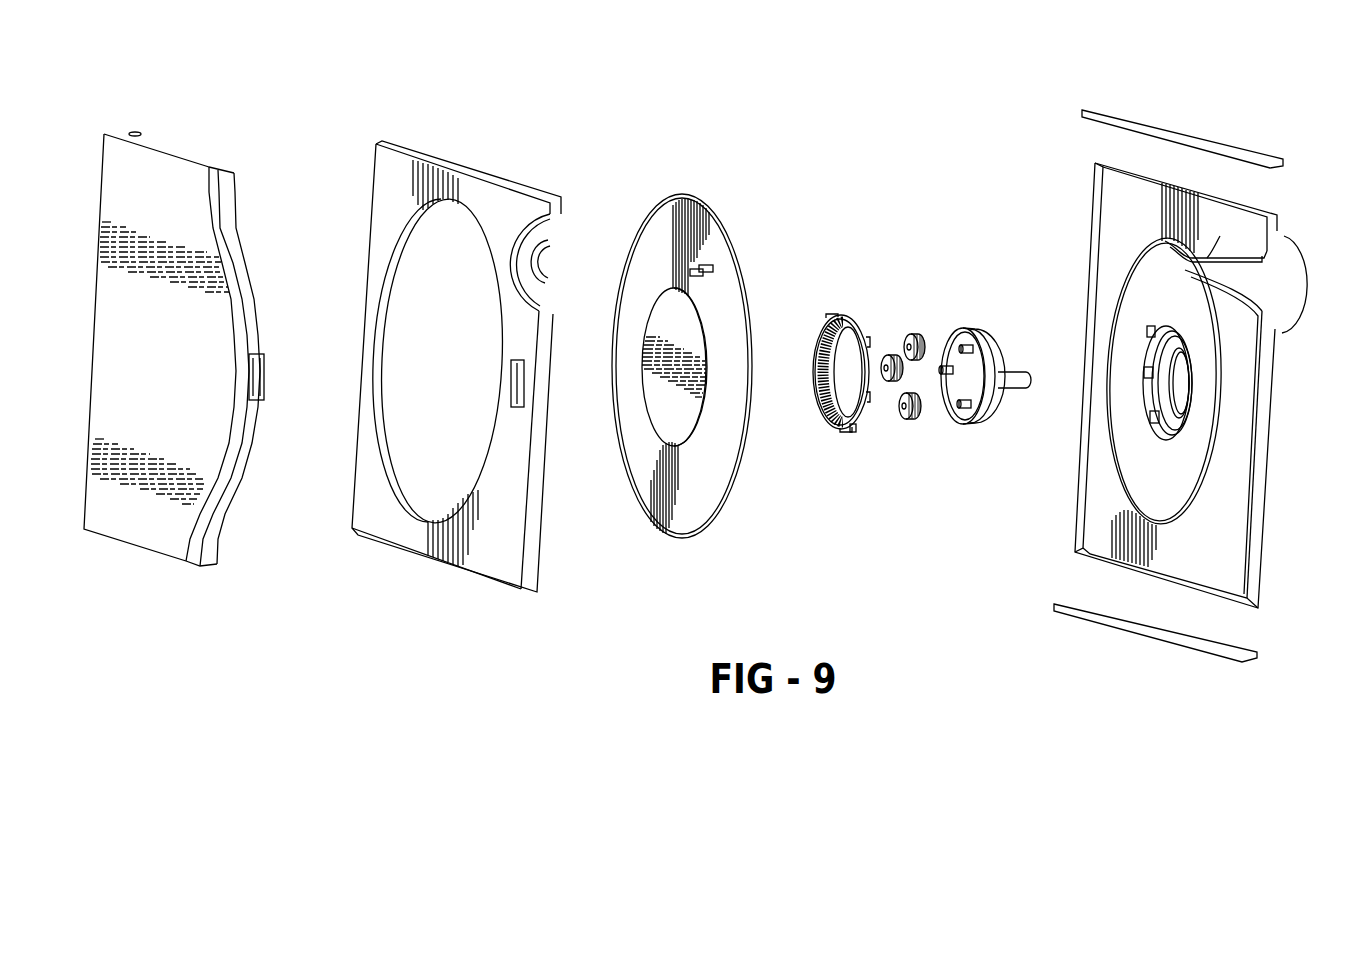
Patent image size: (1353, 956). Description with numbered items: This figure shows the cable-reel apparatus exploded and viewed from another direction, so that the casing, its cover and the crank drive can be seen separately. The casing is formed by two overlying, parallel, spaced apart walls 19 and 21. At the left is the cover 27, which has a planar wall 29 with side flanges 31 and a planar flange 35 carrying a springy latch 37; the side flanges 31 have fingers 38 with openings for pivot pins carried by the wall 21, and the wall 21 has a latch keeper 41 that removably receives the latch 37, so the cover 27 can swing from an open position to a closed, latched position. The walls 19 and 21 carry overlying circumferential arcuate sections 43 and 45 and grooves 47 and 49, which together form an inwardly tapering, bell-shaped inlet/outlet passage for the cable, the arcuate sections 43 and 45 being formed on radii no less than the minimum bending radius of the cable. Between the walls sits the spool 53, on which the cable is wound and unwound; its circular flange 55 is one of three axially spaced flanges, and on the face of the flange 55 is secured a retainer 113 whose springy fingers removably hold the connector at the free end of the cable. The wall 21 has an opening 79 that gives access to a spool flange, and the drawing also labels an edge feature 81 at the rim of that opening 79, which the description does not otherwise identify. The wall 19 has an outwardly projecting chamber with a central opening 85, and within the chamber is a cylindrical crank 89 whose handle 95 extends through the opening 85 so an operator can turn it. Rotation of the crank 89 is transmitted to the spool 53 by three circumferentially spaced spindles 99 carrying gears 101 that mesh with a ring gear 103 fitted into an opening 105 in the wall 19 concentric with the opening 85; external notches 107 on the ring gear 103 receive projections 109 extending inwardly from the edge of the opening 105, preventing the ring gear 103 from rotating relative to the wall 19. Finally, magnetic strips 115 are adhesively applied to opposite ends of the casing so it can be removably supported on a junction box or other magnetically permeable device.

The wall 19 is at (1193, 381).
The wall 21 is at (483, 366).
The cover 27 is at (204, 311).
The planar wall 29 is at (156, 350).
The side flanges 31 is at (211, 153).
The planar flange 35 is at (249, 318).
The springy latch 37 is at (268, 382).
The fingers 38 is at (136, 131).
The latch keeper 41 is at (524, 386).
The arcuate section 43 is at (1290, 258).
The arcuate section 45 is at (541, 278).
The groove 47 is at (1220, 236).
The groove 49 is at (537, 247).
The spool 53 is at (740, 366).
The circular flange 55 is at (692, 522).
The opening 79 is at (484, 440).
The rim 81 is at (388, 288).
The opening 85 is at (1182, 377).
The cylindrical crank 89 is at (997, 387).
The handle 95 is at (1025, 372).
The spindles 99 is at (966, 344).
The gears 101 is at (917, 334).
The ring gear 103 is at (820, 378).
The opening 105 is at (1234, 355).
The external notches 107 is at (852, 432).
The projections 109 is at (1145, 385).
The retainer 113 is at (708, 285).
The magnetic strips 115 is at (1226, 146).